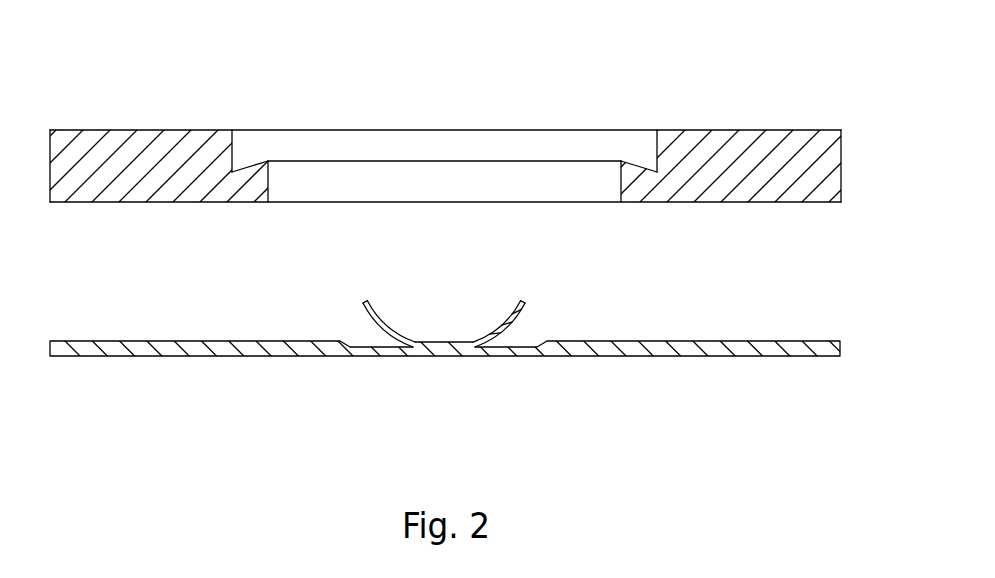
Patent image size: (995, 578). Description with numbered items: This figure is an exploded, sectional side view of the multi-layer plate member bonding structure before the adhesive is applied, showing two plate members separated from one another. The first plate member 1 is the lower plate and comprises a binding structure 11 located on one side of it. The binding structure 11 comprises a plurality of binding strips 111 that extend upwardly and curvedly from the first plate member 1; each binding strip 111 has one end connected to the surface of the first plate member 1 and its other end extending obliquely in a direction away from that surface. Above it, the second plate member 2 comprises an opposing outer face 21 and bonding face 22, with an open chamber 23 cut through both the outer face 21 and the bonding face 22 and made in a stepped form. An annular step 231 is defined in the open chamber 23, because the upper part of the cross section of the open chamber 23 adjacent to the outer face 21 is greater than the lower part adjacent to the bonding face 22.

The first plate member 1 is at (451, 330).
The binding structure 11 is at (443, 295).
The binding strip 111 is at (366, 302).
The second plate member 2 is at (450, 149).
The outer face 21 is at (748, 130).
The bonding face 22 is at (730, 202).
The open chamber 23 is at (468, 125).
The annular step 231 is at (252, 166).